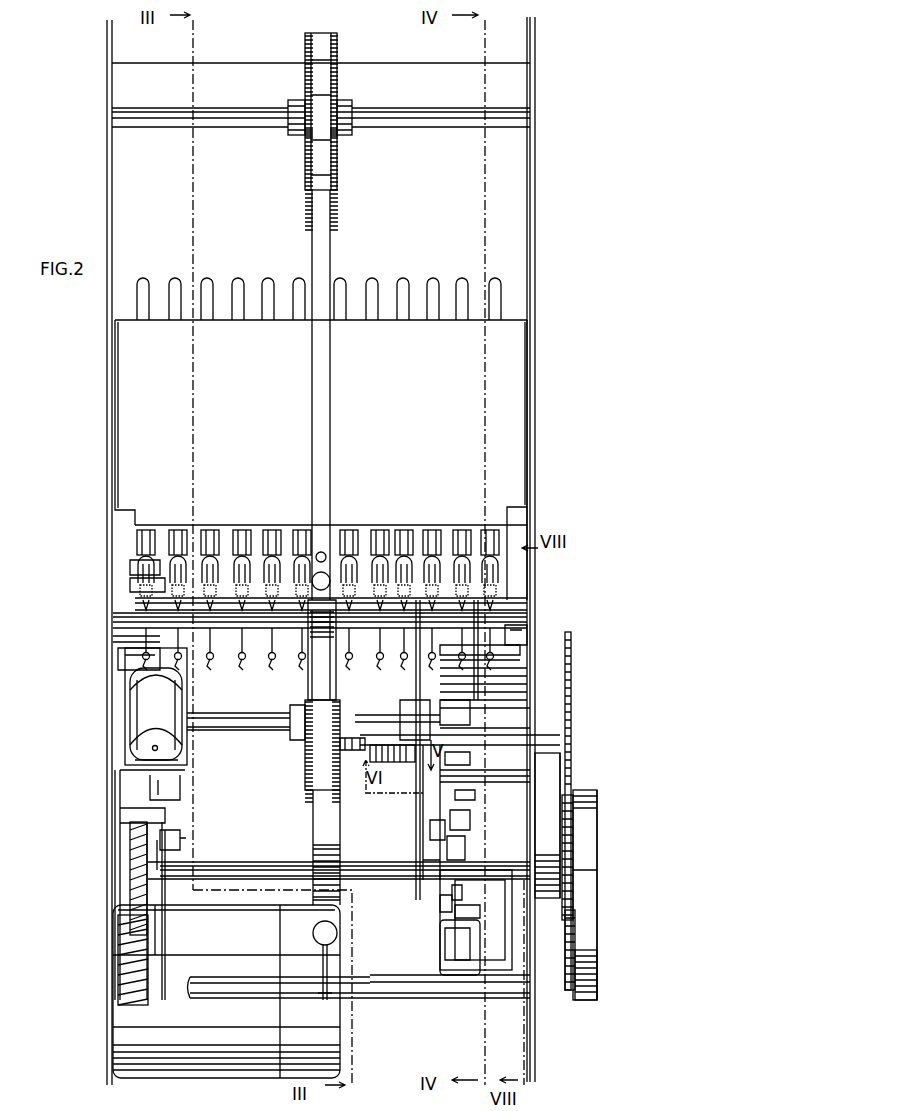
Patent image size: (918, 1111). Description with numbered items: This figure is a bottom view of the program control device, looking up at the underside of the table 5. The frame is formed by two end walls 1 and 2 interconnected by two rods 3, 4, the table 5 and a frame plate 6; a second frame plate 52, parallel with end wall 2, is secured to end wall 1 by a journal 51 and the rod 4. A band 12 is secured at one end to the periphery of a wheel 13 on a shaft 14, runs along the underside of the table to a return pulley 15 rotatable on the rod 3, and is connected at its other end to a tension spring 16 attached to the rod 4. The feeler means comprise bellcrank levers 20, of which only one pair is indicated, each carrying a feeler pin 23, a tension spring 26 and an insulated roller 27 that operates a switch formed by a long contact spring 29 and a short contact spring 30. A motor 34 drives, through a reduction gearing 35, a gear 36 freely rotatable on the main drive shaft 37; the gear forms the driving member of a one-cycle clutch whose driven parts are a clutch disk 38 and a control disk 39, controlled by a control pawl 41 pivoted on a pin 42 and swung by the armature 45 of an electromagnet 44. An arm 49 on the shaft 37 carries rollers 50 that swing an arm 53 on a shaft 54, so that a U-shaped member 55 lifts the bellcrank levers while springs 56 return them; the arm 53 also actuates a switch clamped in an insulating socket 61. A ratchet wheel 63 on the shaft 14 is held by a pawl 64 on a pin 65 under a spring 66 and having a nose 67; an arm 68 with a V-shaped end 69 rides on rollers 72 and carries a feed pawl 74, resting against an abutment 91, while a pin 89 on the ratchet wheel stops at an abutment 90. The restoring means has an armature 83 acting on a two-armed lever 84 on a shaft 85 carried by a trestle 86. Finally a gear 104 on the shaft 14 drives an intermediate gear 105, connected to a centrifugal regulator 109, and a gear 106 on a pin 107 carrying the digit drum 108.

The frame end wall 1 is at (535, 447).
The frame end wall 2 is at (107, 421).
The rod 3 is at (160, 113).
The rod 4 is at (218, 996).
The table 5 is at (527, 229).
The frame plate 6 is at (524, 393).
The band 12 is at (326, 391).
The wheel 13 is at (310, 686).
The shaft 14 is at (220, 716).
The return pulley 15 is at (337, 87).
The tension spring 16 is at (332, 686).
The bellcrank lever 20 is at (135, 595).
The feeler pin 23 is at (118, 662).
The tension spring 26 is at (138, 578).
The roller 27 is at (135, 584).
The long contact spring 29 is at (396, 546).
The short contact spring 30 is at (175, 276).
The motor 34 is at (175, 1068).
The reduction gearing 35 is at (125, 921).
The gear 36 is at (135, 870).
The shaft 37 is at (283, 864).
The clutch disk 38 is at (158, 850).
The control disk 39 is at (160, 869).
The control pawl 41 is at (165, 794).
The pin 42 is at (120, 771).
The electromagnet 44 is at (135, 709).
The armature 45 is at (165, 748).
The arm 49 is at (450, 891).
The roller 50 is at (438, 830).
The journal 51 is at (515, 772).
The frame plate 52 is at (425, 990).
The arm 53 is at (416, 685).
The shaft 54 is at (298, 713).
The U-shaped member 55 is at (527, 585).
The tension spring 56 is at (517, 630).
The insulating socket 61 is at (395, 766).
The ratchet wheel 63 is at (414, 720).
The pawl 64 is at (462, 662).
The pin 65 is at (520, 695).
The tension spring 66 is at (500, 650).
The nose 67 is at (450, 712).
The arm 68 is at (470, 796).
The V-shaped end portion 69 is at (455, 921).
The roller 72 is at (450, 913).
The feed pawl 74 is at (520, 721).
The armature 83 is at (505, 951).
The two-armed lever 84 is at (470, 863).
The shaft 85 is at (460, 837).
The trestle 86 is at (465, 820).
The pin 89 is at (460, 732).
The abutment 90 is at (385, 716).
The abutment 91 is at (448, 931).
The gear 104 is at (572, 655).
The intermediate gear 105 is at (580, 830).
The gear 106 is at (580, 950).
The pin 107 is at (580, 906).
The drum 108 is at (595, 896).
The centrifugal regulator 109 is at (555, 775).